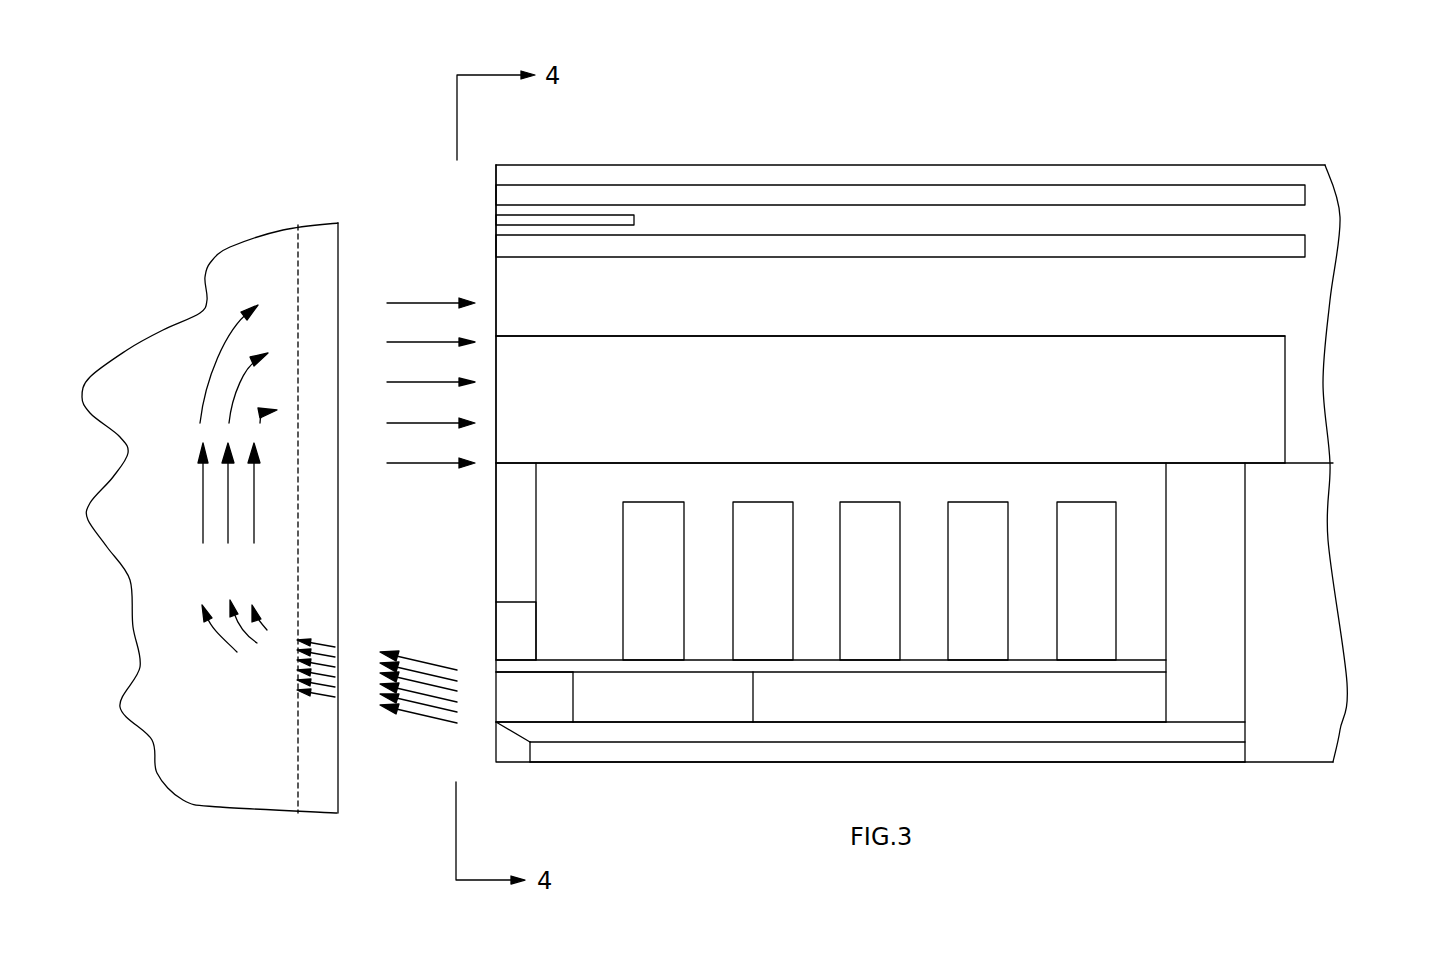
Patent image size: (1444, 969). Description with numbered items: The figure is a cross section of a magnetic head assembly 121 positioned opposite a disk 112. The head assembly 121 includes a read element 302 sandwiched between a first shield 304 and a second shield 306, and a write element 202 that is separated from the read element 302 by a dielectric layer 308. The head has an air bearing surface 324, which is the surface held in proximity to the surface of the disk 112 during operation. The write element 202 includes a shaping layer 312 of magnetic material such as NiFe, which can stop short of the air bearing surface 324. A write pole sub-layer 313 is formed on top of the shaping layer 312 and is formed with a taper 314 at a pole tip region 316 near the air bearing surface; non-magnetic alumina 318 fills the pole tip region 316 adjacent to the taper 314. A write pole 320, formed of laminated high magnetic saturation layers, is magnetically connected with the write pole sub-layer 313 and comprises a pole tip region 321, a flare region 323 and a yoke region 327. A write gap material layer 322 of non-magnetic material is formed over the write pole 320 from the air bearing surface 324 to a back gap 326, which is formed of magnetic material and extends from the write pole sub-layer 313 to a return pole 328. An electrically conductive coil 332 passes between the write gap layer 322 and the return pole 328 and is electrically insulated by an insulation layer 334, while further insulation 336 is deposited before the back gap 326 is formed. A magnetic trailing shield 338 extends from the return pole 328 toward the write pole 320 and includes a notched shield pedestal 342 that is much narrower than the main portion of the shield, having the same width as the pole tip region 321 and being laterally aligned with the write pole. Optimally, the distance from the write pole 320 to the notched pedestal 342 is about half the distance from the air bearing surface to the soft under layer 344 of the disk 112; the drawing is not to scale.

The disk 112 is at (340, 768).
The magnetic head assembly 121 is at (1344, 390).
The write element 202 is at (1240, 326).
The read element 302 is at (508, 219).
The first shield 304 is at (500, 243).
The second shield 306 is at (507, 193).
The dielectric layer 308 is at (635, 305).
The shaping layer 312 is at (1229, 753).
The write pole sub-layer 313 is at (1226, 735).
The taper 314 is at (517, 733).
The pole tip region 316 is at (507, 693).
The alumina 318 is at (515, 745).
The write pole 320 is at (542, 700).
The pole tip region 321 is at (545, 722).
The write gap material layer 322 is at (827, 666).
The flare region 323 is at (665, 707).
The air bearing surface 324 is at (497, 552).
The back gap 326 is at (1207, 602).
The yoke region 327 is at (950, 708).
The return pole 328 is at (1030, 437).
The electrically conductive coil 332 is at (767, 486).
The insulation layer 334 is at (1062, 483).
The insulation 336 is at (872, 502).
The magnetic trailing shield 338 is at (483, 508).
The notched shield pedestal 342 is at (517, 628).
The soft under layer 344 is at (230, 737).